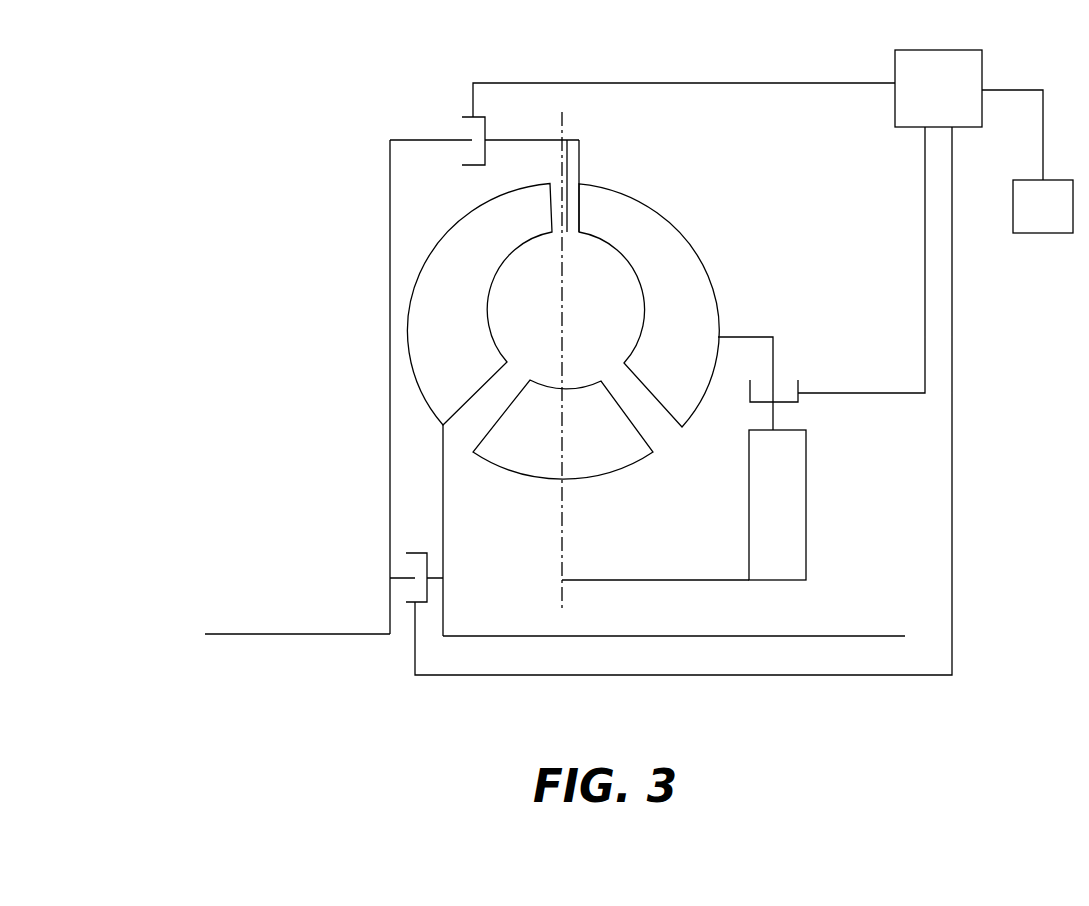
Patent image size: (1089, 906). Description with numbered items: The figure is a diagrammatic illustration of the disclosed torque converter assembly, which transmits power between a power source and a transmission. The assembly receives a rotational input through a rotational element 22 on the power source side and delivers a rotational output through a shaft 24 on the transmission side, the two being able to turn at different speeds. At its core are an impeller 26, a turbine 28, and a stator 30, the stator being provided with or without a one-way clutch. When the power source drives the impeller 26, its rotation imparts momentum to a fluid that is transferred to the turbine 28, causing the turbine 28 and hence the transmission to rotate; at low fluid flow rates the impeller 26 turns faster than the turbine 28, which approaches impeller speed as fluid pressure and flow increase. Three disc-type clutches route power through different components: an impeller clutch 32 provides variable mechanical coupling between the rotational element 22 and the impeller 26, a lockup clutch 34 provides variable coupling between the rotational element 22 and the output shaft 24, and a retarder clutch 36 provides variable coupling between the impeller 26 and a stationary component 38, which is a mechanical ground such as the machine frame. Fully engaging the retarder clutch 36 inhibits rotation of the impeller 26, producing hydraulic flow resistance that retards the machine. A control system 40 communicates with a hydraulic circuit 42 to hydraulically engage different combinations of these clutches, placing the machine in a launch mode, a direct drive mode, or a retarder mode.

The rotational element 22 is at (266, 634).
The shaft 24 is at (870, 636).
The impeller 26 is at (693, 247).
The turbine 28 is at (455, 222).
The stator 30 is at (630, 472).
The impeller clutch 32 is at (452, 114).
The lockup clutch 34 is at (408, 614).
The retarder clutch 36 is at (810, 366).
The stationary component 38 is at (806, 511).
The control system 40 is at (1027, 218).
The hydraulic circuit 42 is at (922, 100).